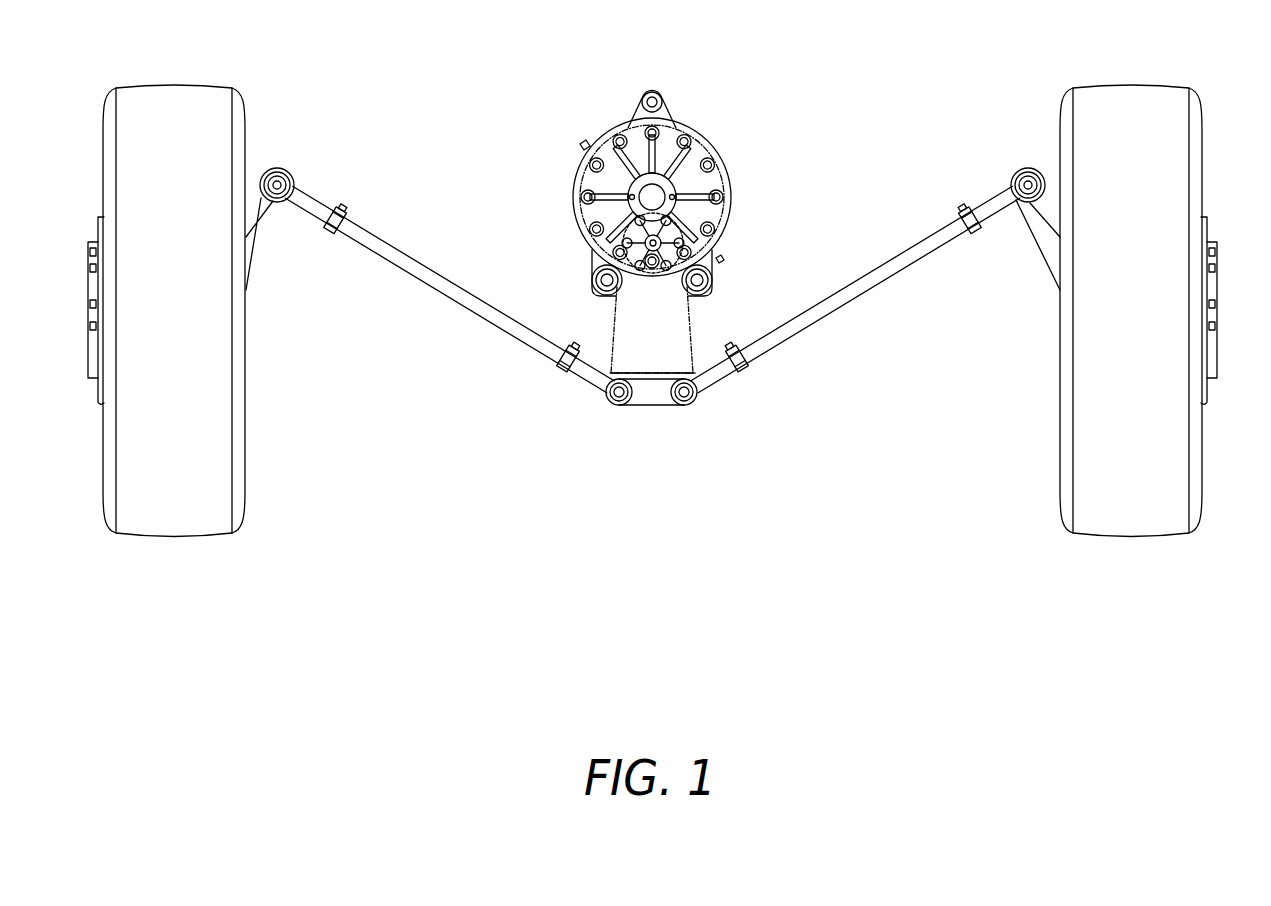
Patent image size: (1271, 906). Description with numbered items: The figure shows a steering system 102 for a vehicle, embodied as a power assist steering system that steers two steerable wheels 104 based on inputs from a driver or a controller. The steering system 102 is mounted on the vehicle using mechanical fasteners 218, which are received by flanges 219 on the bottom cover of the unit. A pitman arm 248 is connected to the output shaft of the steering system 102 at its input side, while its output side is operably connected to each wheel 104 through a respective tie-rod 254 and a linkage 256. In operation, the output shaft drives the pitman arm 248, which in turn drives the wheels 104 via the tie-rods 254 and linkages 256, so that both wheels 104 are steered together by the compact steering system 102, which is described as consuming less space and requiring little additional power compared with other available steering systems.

The steering system 102 is at (545, 147).
The wheels 104 is at (177, 522).
The mechanical fasteners 218 is at (640, 102).
The flanges 219 is at (652, 99).
The pitman arm 248 is at (673, 332).
The tie-rod 254 is at (470, 318).
The linkage 256 is at (262, 248).